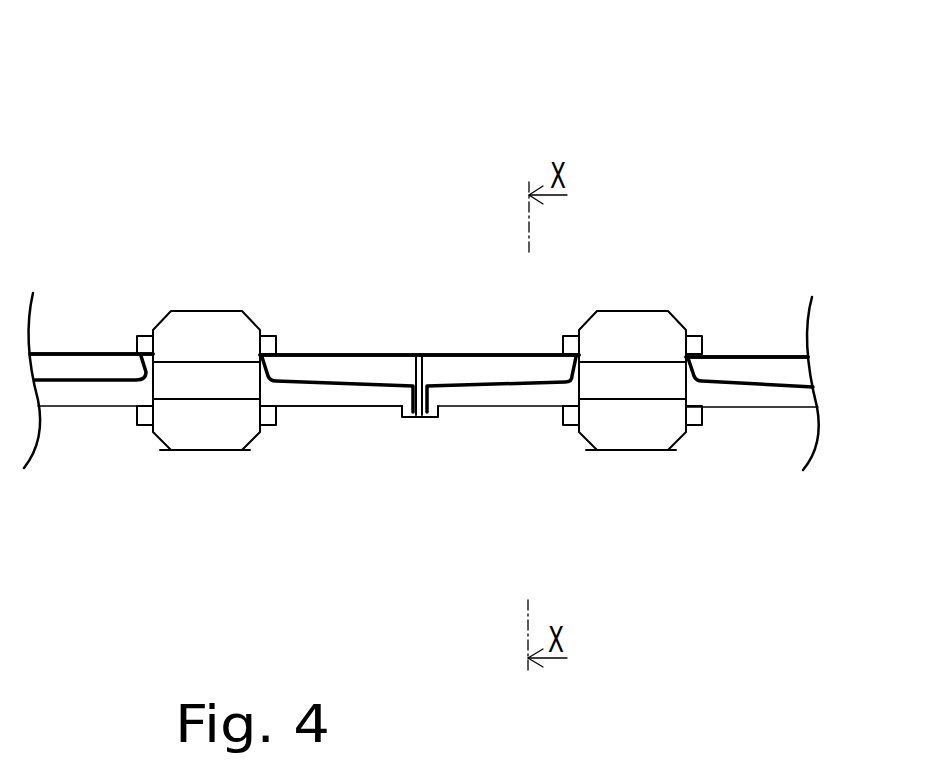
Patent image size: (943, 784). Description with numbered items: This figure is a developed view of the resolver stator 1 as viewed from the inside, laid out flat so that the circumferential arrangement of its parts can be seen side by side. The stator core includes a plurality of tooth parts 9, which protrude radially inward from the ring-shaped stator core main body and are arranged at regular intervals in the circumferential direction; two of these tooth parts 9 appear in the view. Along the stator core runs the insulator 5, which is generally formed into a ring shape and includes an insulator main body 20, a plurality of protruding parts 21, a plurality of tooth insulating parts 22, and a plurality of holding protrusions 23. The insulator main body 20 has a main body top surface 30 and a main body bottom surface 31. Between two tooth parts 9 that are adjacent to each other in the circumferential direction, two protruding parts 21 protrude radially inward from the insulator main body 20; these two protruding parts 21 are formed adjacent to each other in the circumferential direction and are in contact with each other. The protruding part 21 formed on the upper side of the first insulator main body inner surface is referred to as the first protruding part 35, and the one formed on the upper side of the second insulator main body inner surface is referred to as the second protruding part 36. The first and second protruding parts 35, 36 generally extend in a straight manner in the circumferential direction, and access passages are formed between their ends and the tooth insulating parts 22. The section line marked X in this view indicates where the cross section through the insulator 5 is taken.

The resolver stator 1 is at (91, 106).
The insulator 5 is at (822, 513).
The tooth part 9 is at (207, 375).
The insulator main body 20 is at (424, 413).
The protruding part 21 is at (418, 441).
The tooth insulating part 22 is at (203, 425).
The holding protrusion 23 is at (420, 417).
The main body top surface 30 is at (332, 355).
The main body bottom surface 31 is at (297, 397).
The first protruding part 35 is at (367, 368).
The second protruding part 36 is at (72, 363).